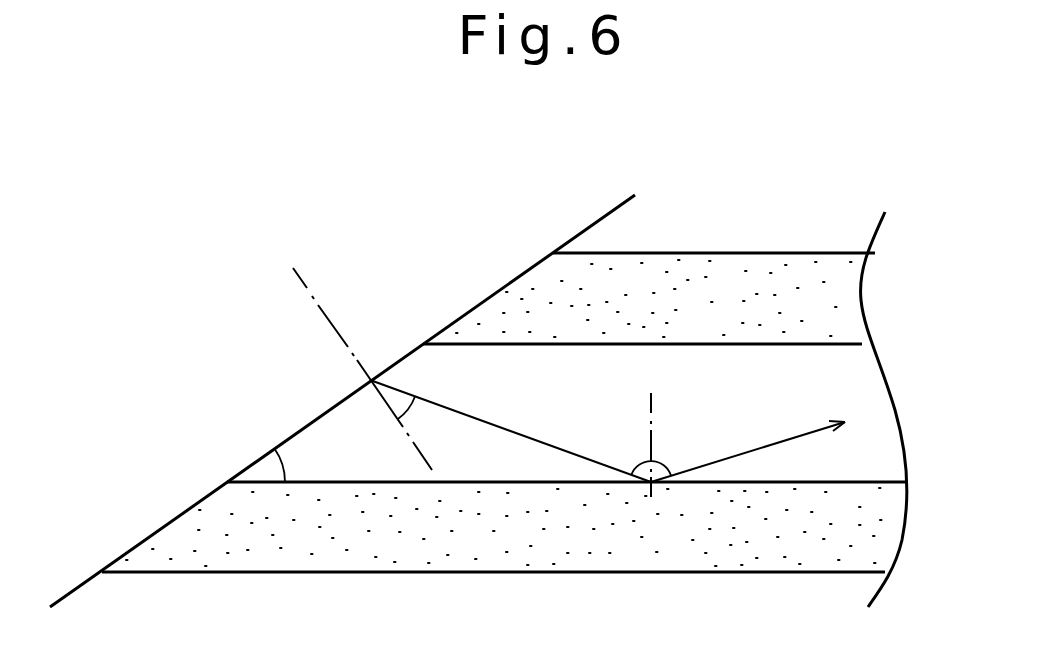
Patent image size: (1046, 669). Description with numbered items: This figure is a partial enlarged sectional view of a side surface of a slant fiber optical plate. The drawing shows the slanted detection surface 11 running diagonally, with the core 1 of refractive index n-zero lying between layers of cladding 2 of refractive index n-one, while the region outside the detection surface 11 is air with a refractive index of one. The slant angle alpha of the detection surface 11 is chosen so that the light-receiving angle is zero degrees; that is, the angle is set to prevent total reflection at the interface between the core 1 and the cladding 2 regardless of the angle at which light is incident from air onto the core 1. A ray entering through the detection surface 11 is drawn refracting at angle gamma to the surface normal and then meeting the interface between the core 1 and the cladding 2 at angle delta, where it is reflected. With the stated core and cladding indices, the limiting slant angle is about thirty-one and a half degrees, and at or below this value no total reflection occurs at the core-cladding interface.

The core 1 is at (88, 596).
The cladding 2 is at (168, 540).
The detection surface 11 is at (627, 196).